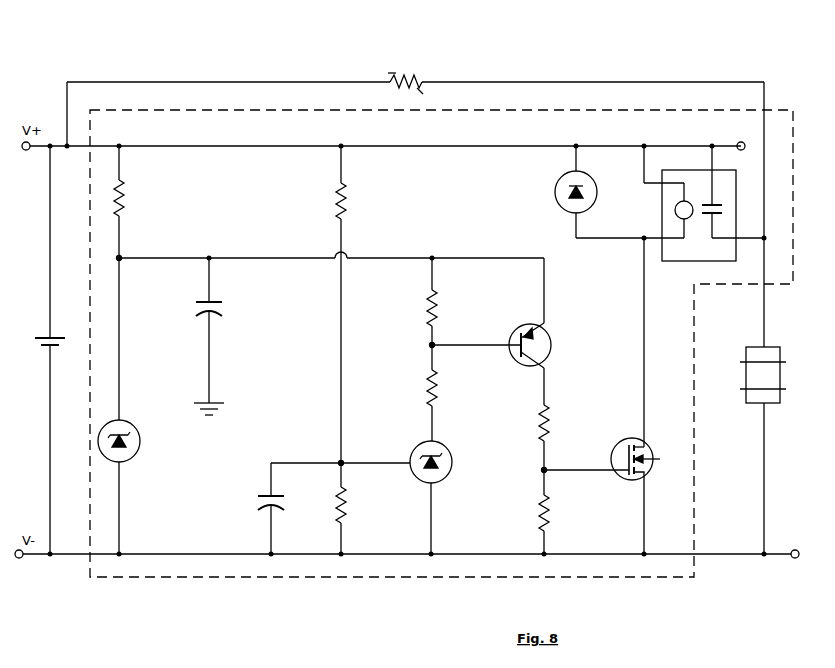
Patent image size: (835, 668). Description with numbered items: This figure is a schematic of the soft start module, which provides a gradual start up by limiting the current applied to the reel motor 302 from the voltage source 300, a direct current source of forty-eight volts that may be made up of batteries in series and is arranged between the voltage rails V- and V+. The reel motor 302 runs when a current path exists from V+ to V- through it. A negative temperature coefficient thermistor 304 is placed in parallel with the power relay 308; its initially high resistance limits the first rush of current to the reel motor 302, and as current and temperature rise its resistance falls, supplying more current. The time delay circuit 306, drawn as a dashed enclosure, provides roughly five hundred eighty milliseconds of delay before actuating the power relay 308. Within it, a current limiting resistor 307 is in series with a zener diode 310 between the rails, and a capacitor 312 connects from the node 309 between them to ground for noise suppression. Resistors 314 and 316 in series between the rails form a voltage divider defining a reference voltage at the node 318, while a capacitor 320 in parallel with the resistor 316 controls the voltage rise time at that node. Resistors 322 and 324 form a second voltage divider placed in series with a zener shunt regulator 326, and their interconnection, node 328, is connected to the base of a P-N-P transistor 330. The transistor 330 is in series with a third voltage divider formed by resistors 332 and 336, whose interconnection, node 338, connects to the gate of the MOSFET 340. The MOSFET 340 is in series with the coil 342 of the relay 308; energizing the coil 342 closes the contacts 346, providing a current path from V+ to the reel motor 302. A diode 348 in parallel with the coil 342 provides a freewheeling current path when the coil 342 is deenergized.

The voltage source 300 is at (63, 366).
The reel motor 302 is at (746, 378).
The thermistor 304 is at (410, 84).
The time delay circuit 306 is at (258, 577).
The current limiting resistor 307 is at (125, 205).
The power relay 308 is at (675, 172).
The node 309 is at (122, 258).
The zener diode 310 is at (130, 456).
The capacitor 312 is at (222, 302).
The resistor 314 is at (347, 204).
The resistor 316 is at (347, 503).
The node 318 is at (339, 461).
The capacitor 320 is at (268, 494).
The resistor 322 is at (437, 307).
The resistor 324 is at (437, 385).
The zener shunt regulator 326 is at (452, 462).
The node 328 is at (430, 345).
The P-N-P transistor 330 is at (551, 340).
The resistor 332 is at (548, 407).
The resistor 336 is at (548, 512).
The node 338 is at (547, 468).
The MOSFET 340 is at (620, 448).
The coil 342 is at (662, 211).
The contacts 346 is at (708, 204).
The diode 348 is at (556, 200).